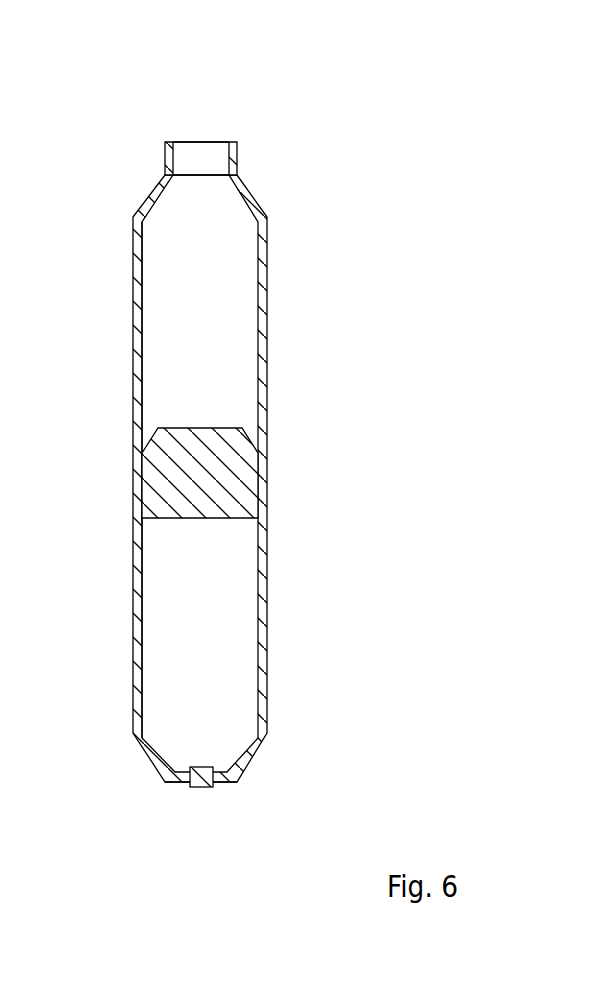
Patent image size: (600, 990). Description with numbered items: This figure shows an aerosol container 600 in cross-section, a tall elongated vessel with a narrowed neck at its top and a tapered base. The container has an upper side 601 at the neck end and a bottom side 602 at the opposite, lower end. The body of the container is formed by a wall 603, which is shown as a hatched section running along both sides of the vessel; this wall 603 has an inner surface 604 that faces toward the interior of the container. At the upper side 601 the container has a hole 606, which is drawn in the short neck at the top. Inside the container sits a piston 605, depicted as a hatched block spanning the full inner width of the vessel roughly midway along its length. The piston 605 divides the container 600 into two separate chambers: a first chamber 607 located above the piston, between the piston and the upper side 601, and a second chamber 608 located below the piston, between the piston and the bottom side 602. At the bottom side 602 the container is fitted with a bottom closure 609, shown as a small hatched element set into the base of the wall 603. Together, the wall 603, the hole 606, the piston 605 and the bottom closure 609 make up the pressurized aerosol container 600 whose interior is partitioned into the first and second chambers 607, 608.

The aerosol container 600 is at (345, 178).
The upper side 601 is at (209, 116).
The bottom side 602 is at (209, 812).
The wall 603 is at (278, 340).
The inner surface 604 is at (143, 318).
The piston 605 is at (228, 477).
The hole 606 is at (192, 152).
The first chamber 607 is at (216, 365).
The second chamber 608 is at (216, 632).
The bottom closure 609 is at (198, 787).